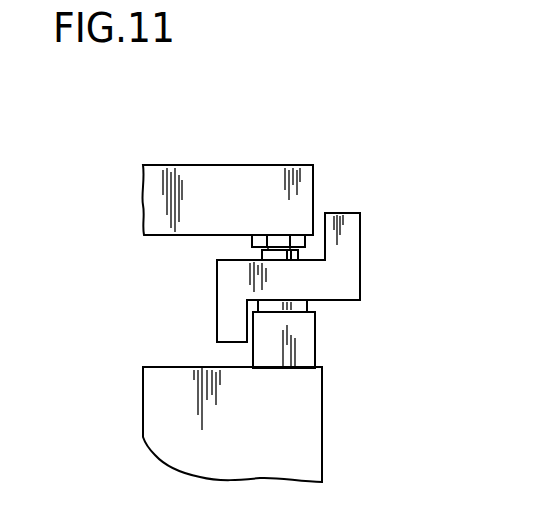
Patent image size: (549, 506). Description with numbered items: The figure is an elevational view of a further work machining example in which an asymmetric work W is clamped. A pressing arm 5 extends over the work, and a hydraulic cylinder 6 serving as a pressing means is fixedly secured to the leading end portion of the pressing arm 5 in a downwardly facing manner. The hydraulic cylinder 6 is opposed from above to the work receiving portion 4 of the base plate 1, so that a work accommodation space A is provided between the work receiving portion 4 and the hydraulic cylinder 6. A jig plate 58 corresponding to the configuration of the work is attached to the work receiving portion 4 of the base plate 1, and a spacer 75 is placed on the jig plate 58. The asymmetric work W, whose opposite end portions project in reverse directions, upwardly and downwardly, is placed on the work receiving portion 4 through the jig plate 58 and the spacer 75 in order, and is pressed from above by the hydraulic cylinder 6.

The pressing arm 5 is at (233, 172).
The hydraulic cylinder 6 is at (252, 240).
The work W is at (353, 252).
The work accommodation space A is at (176, 299).
The spacer 75 is at (308, 305).
The jig plate 58 is at (313, 350).
The work receiving portion 4 is at (313, 402).
The base plate 1 is at (324, 443).